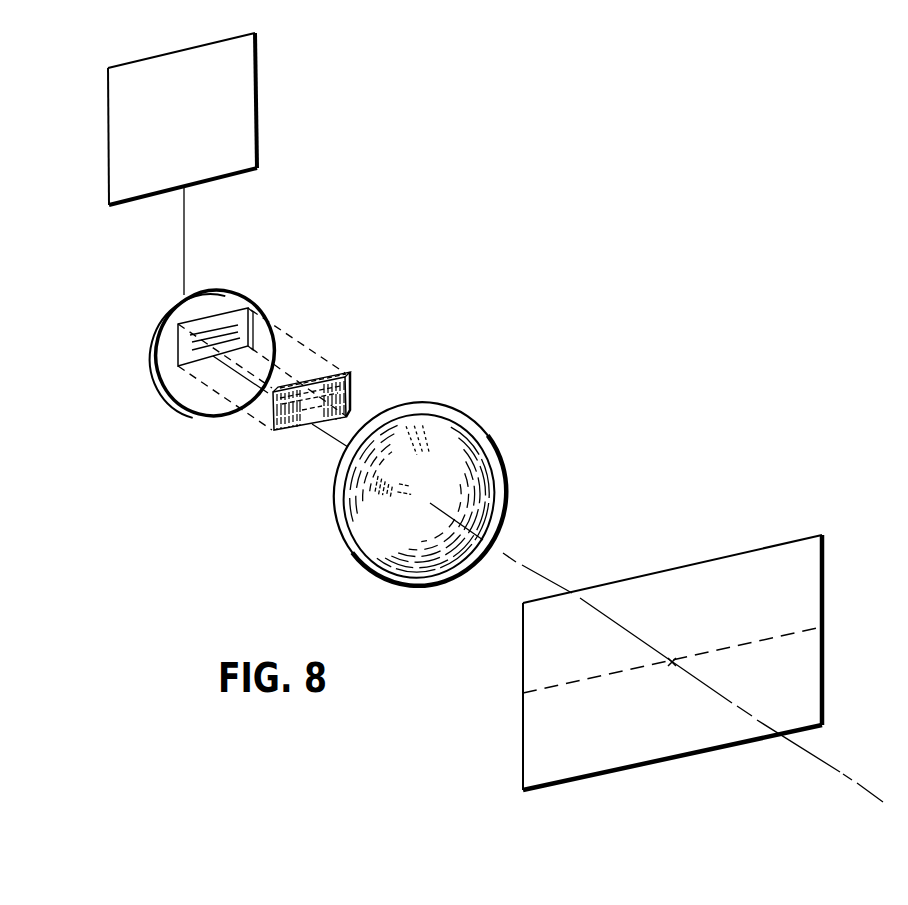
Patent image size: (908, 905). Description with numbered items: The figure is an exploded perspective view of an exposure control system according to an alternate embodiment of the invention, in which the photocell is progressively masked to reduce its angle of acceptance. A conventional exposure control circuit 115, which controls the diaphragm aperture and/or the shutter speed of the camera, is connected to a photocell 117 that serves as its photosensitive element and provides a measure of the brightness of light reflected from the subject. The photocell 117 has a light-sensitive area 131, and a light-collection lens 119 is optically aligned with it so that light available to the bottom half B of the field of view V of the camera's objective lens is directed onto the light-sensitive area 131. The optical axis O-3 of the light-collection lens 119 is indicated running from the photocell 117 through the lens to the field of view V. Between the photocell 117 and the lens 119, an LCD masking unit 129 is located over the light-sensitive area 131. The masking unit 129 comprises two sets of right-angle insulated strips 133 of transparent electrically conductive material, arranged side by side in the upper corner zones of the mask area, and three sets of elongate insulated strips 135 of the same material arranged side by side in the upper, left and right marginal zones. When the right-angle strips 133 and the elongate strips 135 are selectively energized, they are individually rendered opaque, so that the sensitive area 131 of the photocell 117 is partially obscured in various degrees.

The exposure control circuit 115 is at (258, 164).
The photocell 117 is at (153, 376).
The light-collection lens 119 is at (340, 530).
The LCD masking unit 129 is at (303, 412).
The light-sensitive area 131 is at (249, 312).
The right-angle insulated strips 133 is at (350, 383).
The elongate insulated strips 135 is at (322, 387).
The optical axis O-3 is at (522, 562).
The field of view V is at (522, 720).
The bottom half of the field of view B is at (689, 731).